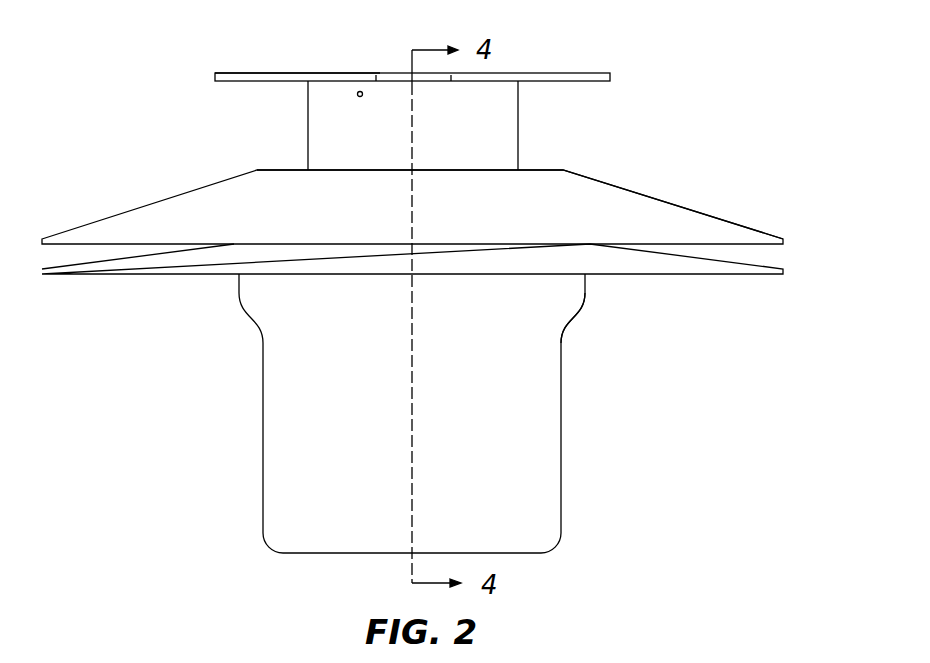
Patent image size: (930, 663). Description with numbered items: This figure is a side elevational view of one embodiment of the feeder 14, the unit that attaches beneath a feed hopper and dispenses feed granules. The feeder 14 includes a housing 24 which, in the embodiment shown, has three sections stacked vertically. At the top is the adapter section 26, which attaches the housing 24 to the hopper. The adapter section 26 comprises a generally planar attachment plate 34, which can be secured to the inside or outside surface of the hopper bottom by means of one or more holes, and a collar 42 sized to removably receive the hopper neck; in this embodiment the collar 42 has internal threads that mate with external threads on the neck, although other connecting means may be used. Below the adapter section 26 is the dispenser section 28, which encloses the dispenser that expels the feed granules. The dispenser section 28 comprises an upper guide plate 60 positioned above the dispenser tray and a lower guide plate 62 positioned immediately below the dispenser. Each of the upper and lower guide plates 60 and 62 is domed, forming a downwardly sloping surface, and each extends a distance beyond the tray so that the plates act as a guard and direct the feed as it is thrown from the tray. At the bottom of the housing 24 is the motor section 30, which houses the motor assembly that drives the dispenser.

The feeder 14 is at (672, 117).
The housing 24 is at (567, 321).
The adapter section 26 is at (568, 73).
The dispenser section 28 is at (117, 210).
The motor section 30 is at (293, 448).
The attachment plate 34 is at (266, 73).
The collar 42 is at (506, 131).
The upper guide plate 60 is at (665, 204).
The lower guide plate 62 is at (695, 262).